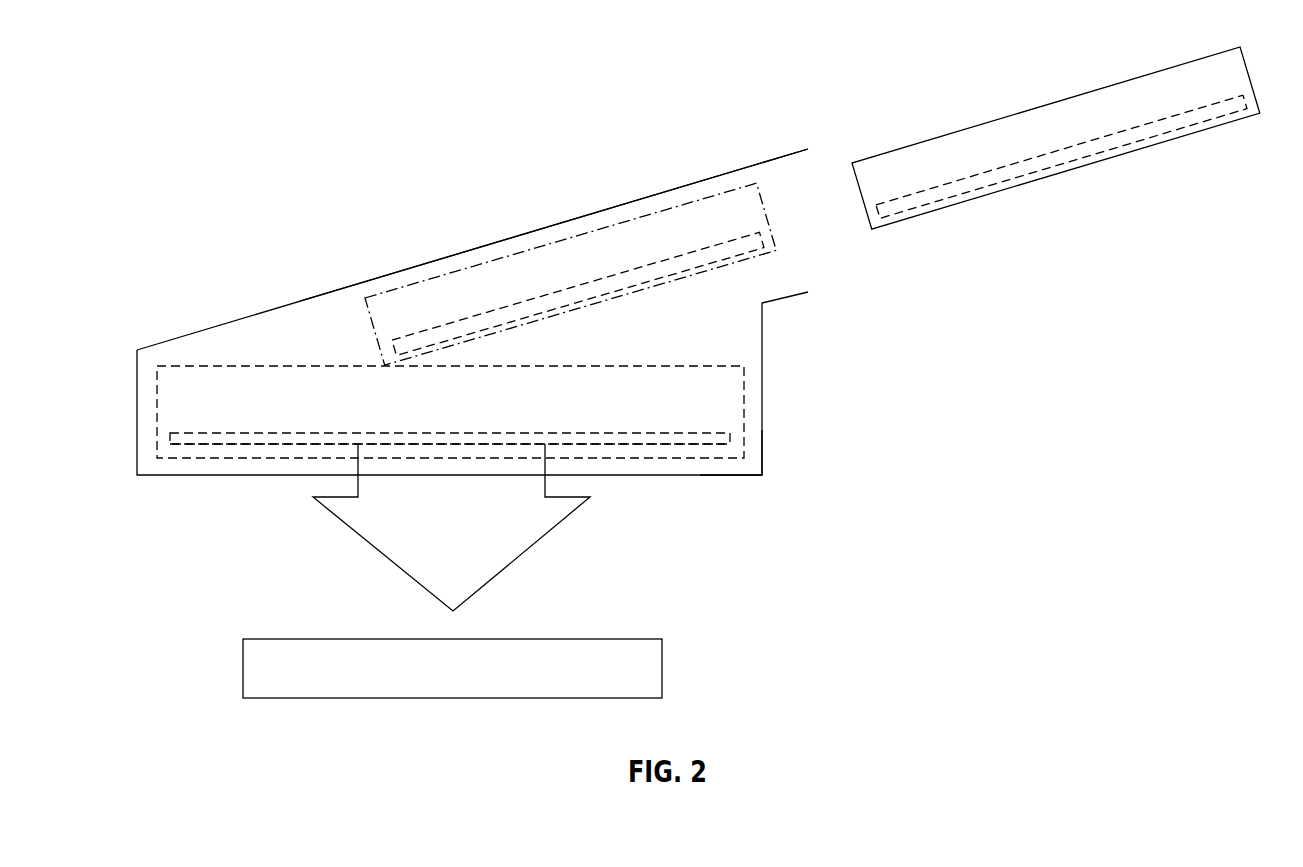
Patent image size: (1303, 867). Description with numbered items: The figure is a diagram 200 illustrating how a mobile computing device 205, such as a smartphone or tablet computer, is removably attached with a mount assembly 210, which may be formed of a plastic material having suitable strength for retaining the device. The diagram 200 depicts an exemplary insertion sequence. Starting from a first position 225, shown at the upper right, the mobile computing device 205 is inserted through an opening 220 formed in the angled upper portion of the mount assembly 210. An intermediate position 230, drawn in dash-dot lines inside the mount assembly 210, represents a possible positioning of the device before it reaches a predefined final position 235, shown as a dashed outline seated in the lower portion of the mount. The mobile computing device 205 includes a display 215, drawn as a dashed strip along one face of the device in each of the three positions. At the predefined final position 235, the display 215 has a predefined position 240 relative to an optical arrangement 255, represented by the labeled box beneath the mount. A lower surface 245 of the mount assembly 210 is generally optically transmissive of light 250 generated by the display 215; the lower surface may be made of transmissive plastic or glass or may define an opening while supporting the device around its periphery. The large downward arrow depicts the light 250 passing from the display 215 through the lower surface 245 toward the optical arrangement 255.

The diagram 200 is at (157, 76).
The mobile computing device 205 is at (1182, 64).
The mount assembly 210 is at (168, 342).
The display 215 is at (170, 433).
The opening 220 is at (811, 168).
The first position 225 is at (1013, 76).
The intermediate position 230 is at (458, 272).
The predefined final position 235 is at (744, 381).
The predefined position 240 is at (729, 441).
The lower surface 245 is at (716, 494).
The light 250 is at (383, 556).
The optical arrangement 255 is at (615, 638).